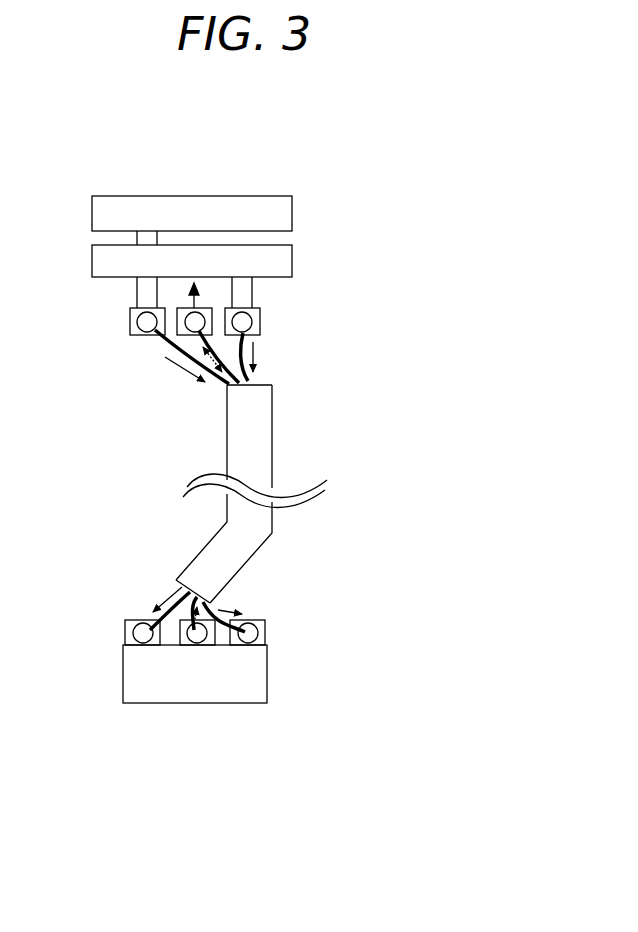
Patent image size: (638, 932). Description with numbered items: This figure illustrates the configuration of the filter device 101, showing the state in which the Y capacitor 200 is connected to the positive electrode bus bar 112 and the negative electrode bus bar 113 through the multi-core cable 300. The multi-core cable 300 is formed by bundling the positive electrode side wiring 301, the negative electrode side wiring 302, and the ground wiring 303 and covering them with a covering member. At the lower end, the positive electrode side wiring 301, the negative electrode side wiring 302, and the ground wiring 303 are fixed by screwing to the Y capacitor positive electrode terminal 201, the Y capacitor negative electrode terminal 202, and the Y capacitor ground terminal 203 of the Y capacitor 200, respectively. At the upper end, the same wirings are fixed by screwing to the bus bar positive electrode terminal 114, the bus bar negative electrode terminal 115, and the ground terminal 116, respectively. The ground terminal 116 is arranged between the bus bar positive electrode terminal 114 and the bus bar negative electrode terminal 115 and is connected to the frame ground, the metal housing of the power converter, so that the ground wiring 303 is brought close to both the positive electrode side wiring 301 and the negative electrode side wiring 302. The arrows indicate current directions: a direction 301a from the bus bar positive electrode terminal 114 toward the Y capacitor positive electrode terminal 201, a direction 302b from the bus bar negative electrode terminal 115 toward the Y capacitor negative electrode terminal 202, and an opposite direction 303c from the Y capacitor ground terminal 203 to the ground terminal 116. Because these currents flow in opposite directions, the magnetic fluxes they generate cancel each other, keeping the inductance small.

The filter device 101 is at (383, 173).
The positive electrode bus bar 112 is at (292, 210).
The negative electrode bus bar 113 is at (292, 259).
The bus bar positive electrode terminal 114 is at (130, 313).
The bus bar negative electrode terminal 115 is at (260, 322).
The ground terminal 116 is at (165, 357).
The multi-core cable 300 is at (273, 447).
The direction of current in positive electrode side wiring 301a is at (190, 380).
The direction of current in negative electrode side wiring 302b is at (253, 348).
The direction of current in ground wiring 303c is at (255, 363).
The Y capacitor 200 is at (155, 703).
The Y capacitor positive electrode terminal 201 is at (125, 632).
The Y capacitor negative electrode terminal 202 is at (267, 632).
The Y capacitor ground terminal 203 is at (212, 645).
The positive electrode side wiring 301 is at (152, 620).
The negative electrode side wiring 302 is at (210, 613).
The ground wiring 303 is at (178, 591).